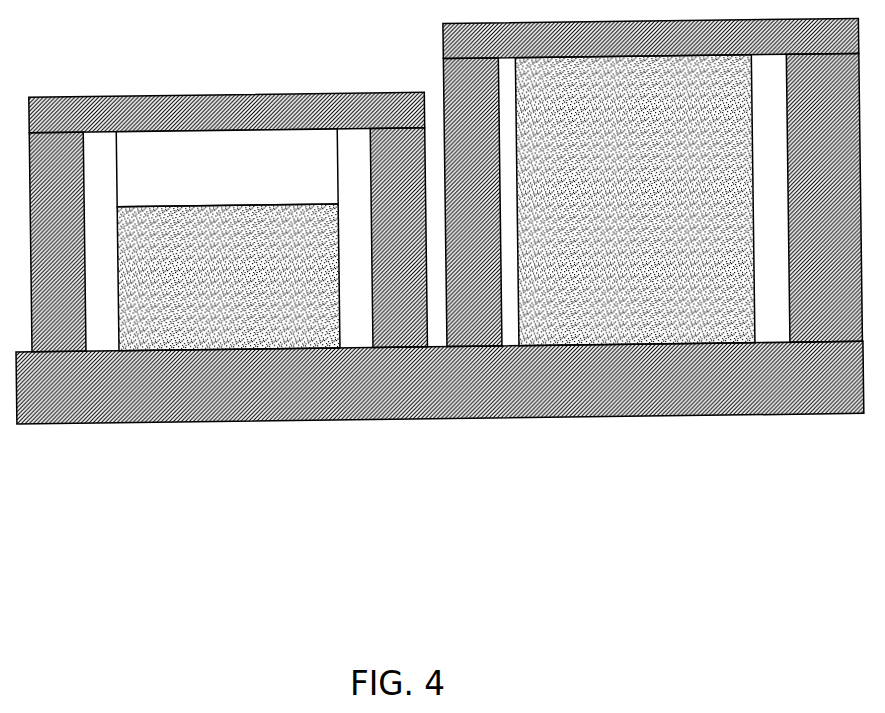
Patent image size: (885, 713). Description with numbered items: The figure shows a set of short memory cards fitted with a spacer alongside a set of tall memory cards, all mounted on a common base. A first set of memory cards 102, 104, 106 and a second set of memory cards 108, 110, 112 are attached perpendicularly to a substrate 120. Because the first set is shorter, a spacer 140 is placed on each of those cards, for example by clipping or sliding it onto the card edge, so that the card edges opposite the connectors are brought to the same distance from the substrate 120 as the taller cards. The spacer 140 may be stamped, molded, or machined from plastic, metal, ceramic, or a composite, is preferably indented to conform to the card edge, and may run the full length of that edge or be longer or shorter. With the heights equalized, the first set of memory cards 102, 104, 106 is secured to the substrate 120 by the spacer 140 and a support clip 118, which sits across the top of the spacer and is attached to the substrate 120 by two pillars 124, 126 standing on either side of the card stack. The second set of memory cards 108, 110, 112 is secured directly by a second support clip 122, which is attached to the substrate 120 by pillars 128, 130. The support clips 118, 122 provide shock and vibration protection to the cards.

The memory card 102 is at (228, 277).
The memory card 104 is at (228, 277).
The memory card 106 is at (228, 277).
The memory card 108 is at (635, 200).
The memory card 110 is at (635, 200).
The memory card 112 is at (635, 200).
The support clip 118 is at (227, 112).
The substrate 120 is at (440, 382).
The support clip 122 is at (651, 38).
The pillar 124 is at (57, 242).
The pillar 126 is at (398, 238).
The pillar 128 is at (472, 202).
The pillar 130 is at (824, 197).
The spacer 140 is at (227, 168).